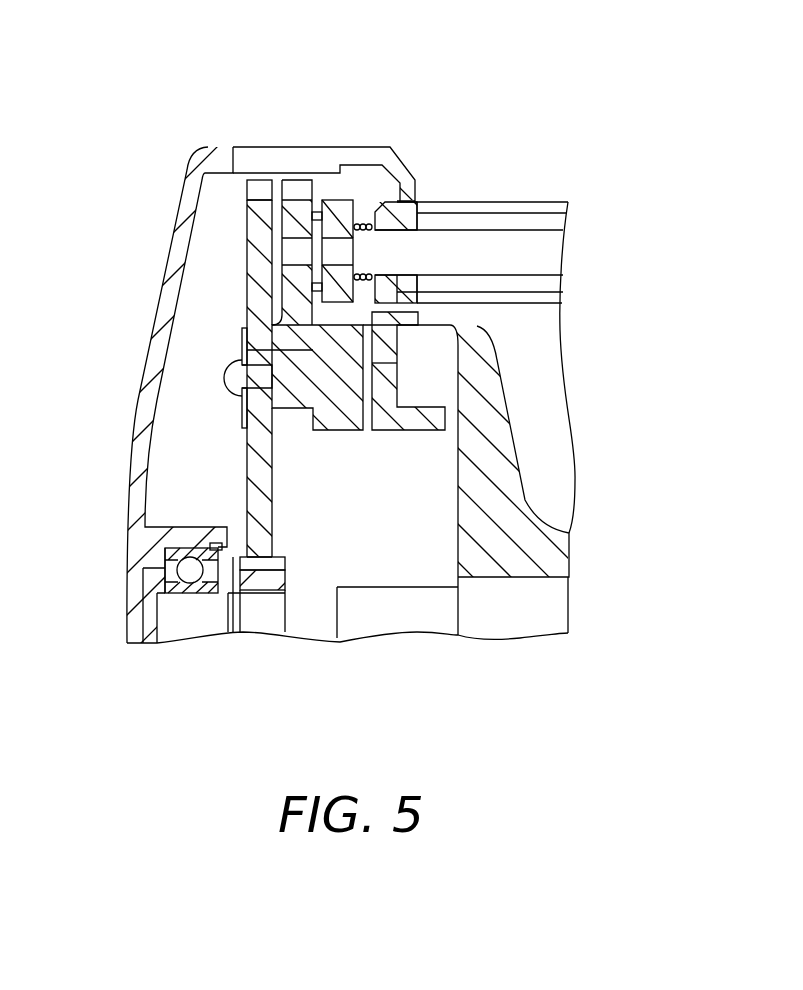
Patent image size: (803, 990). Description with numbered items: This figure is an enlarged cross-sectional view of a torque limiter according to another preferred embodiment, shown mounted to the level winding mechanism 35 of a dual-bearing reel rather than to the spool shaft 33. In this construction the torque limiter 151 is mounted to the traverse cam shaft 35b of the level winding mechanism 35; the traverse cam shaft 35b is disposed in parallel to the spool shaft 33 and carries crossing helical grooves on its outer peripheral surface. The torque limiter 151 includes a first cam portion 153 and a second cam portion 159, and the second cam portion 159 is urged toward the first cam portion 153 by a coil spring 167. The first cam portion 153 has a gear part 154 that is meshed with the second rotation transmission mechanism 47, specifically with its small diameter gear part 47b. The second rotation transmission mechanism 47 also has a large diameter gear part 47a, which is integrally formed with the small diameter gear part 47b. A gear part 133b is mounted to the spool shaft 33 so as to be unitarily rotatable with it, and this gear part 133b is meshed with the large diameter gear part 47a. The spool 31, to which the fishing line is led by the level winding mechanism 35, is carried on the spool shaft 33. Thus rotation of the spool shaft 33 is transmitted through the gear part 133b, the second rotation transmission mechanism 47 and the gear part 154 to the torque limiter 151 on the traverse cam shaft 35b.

The first cam portion 153 is at (279, 161).
The gear part 154 is at (301, 190).
The second cam portion 159 is at (332, 179).
The torque limiter 151 is at (355, 179).
The coil spring 167 is at (374, 204).
The level winding mechanism 35 is at (529, 179).
The traverse cam shaft 35b is at (460, 248).
The second rotation transmission mechanism 47 is at (206, 282).
The large diameter gear part 47a is at (258, 472).
The small diameter gear part 47b is at (280, 311).
The spool 31 is at (488, 382).
The spool shaft 33 is at (395, 618).
The gear part 133b is at (290, 545).